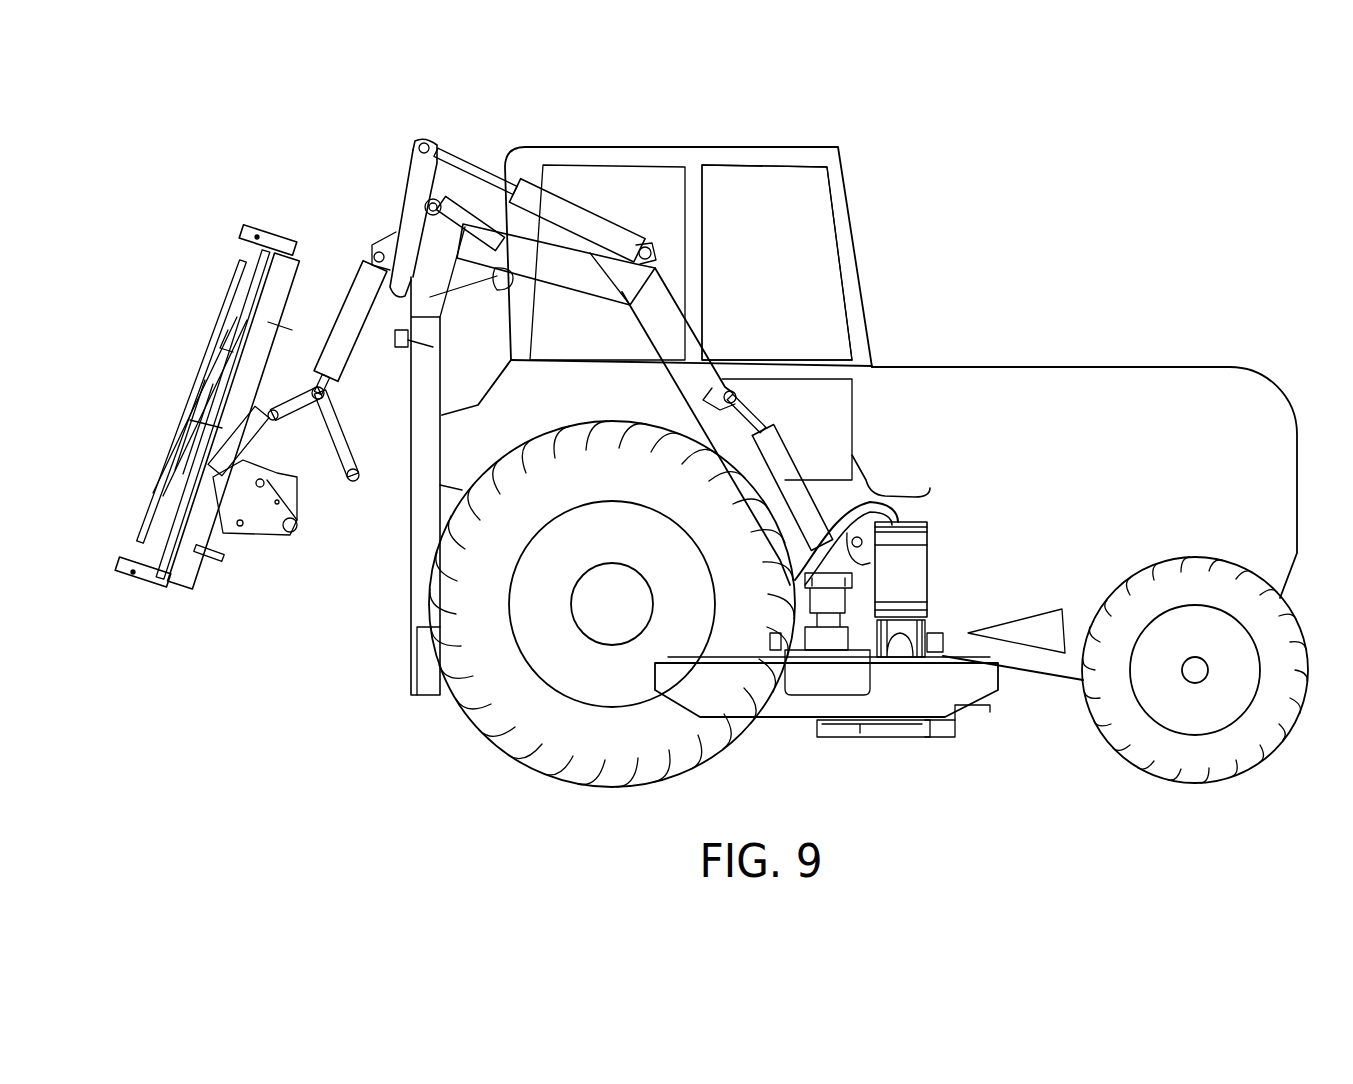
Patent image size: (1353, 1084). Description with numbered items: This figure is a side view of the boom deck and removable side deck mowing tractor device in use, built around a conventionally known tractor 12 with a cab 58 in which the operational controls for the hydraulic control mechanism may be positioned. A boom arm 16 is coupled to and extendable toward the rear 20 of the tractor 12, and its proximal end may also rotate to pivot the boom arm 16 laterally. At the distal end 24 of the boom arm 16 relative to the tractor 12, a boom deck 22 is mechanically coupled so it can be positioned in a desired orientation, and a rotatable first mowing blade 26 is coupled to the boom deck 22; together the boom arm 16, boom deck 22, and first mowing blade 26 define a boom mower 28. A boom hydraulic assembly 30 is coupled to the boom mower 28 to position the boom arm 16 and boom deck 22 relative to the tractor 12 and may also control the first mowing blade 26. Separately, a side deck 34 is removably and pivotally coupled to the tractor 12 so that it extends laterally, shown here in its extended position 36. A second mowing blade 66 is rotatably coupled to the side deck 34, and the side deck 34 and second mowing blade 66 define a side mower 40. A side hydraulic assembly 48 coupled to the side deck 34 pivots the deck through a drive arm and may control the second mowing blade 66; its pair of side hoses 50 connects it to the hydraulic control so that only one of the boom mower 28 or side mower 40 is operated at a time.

The tractor 12 is at (954, 384).
The boom arm 16 is at (623, 293).
The rear 20 is at (400, 590).
The boom deck 22 is at (283, 270).
The distal end 24 is at (300, 540).
The first mowing blade 26 is at (185, 486).
The boom mower 28 is at (227, 371).
The boom hydraulic assembly 30 is at (291, 415).
The side deck 34 is at (764, 692).
The extended position 36 is at (873, 722).
The side mower 40 is at (953, 623).
The side hydraulic assembly 48 is at (845, 605).
The side hoses 50 is at (863, 498).
The cab 58 is at (806, 272).
The second mowing blade 66 is at (982, 710).